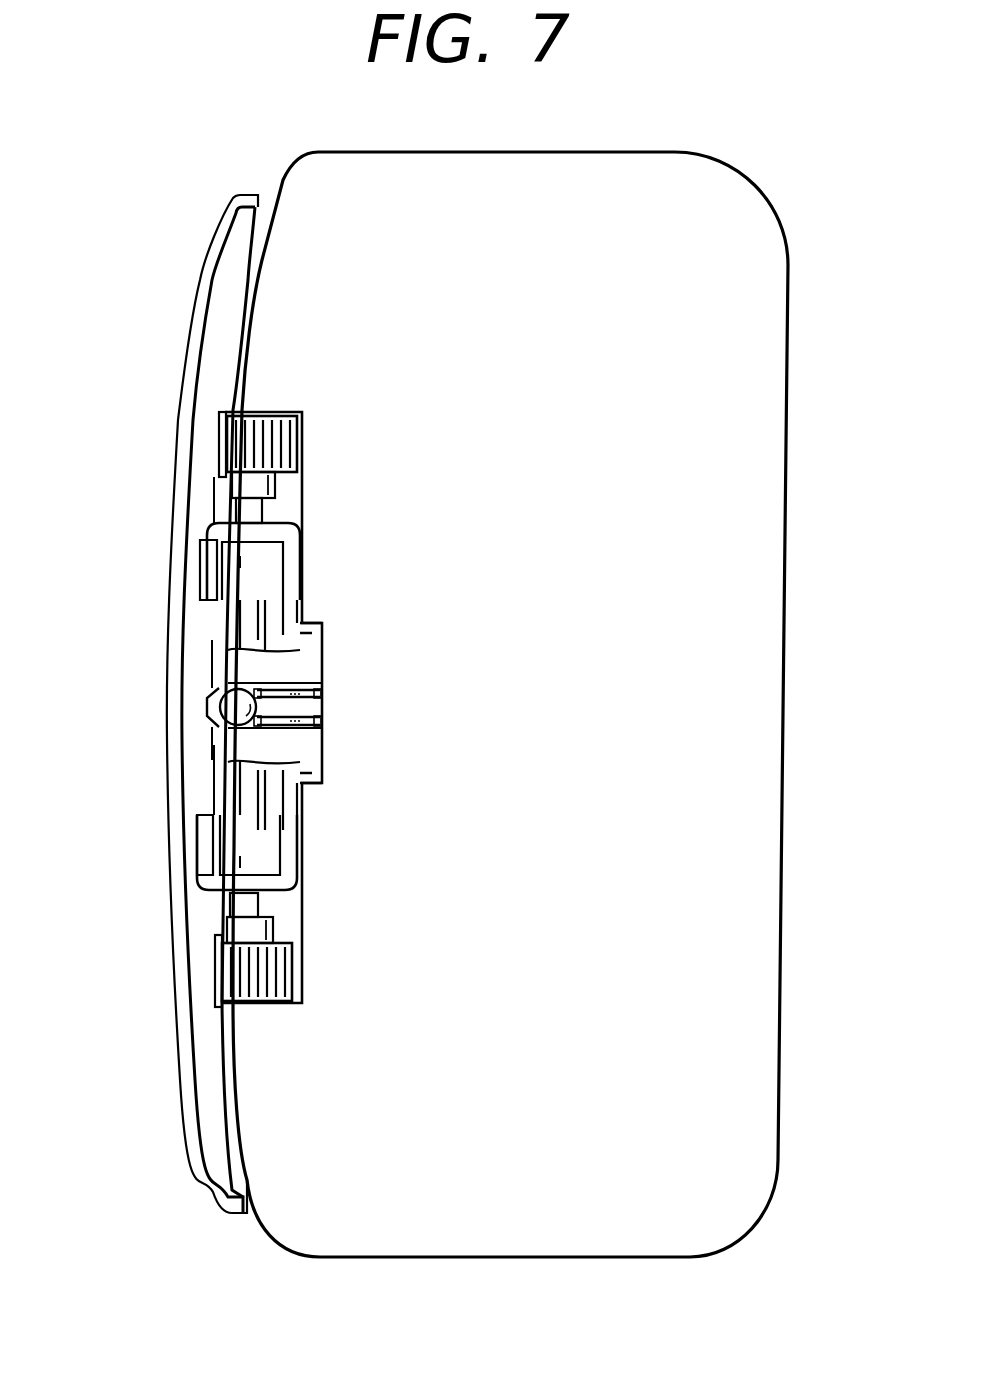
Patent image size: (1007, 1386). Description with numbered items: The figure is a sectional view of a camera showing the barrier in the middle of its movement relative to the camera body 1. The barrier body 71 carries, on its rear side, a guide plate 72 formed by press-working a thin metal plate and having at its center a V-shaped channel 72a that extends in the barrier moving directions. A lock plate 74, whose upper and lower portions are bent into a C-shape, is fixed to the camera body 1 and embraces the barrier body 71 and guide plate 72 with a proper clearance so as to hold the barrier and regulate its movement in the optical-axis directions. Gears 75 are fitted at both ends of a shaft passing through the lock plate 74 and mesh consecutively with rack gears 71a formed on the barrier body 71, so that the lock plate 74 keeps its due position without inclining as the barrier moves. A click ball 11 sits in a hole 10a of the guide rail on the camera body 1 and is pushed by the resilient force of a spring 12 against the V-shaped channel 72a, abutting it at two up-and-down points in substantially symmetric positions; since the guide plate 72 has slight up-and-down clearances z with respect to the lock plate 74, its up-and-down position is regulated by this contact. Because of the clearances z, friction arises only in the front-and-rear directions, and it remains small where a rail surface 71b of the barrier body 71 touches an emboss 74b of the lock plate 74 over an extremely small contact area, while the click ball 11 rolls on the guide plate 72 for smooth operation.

The camera body 1 is at (742, 968).
The barrier body 71 is at (226, 273).
The rack gear 71a is at (226, 452).
The rail surface 71b is at (214, 527).
The guide plate 72 is at (220, 620).
The V-shaped channel 72a is at (214, 708).
The lock plate 74 is at (222, 925).
The emboss 74b is at (206, 578).
The gear 75 is at (237, 438).
The hole 10a is at (300, 665).
The click ball 11 is at (256, 708).
The spring 12 is at (300, 740).
The clearance z is at (240, 562).